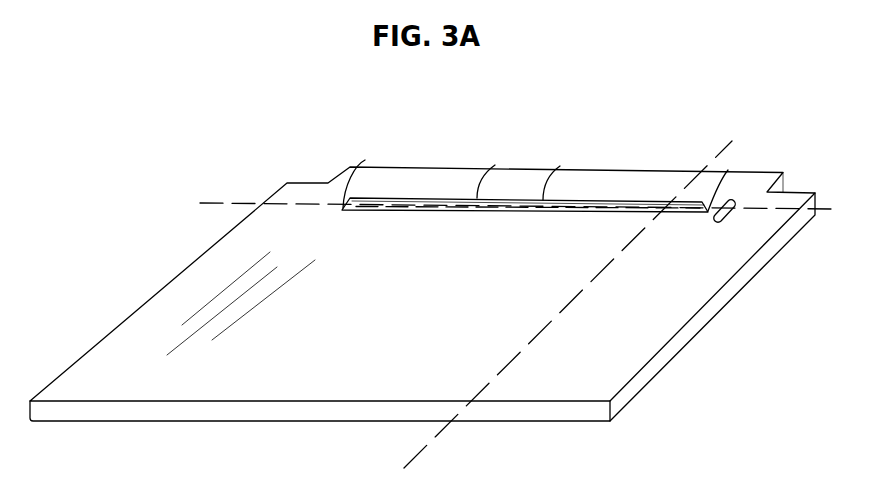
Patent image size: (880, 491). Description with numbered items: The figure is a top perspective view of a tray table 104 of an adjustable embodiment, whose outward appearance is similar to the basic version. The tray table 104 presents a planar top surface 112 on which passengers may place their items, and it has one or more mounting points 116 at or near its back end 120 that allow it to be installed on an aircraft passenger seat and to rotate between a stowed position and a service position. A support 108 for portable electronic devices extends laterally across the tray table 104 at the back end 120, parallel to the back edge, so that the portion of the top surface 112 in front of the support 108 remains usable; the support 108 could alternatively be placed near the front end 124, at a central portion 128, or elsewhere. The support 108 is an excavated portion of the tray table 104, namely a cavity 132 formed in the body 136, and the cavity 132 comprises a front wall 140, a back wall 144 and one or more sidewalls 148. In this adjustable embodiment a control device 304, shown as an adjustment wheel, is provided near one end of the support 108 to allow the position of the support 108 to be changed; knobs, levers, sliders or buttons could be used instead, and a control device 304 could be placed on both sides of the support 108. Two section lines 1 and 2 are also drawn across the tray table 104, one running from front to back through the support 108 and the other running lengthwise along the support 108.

The tray table 104 is at (716, 360).
The support 108 is at (584, 198).
The top surface 112 is at (644, 275).
The mounting points 116 is at (318, 166).
The back end 120 is at (624, 167).
The front end 124 is at (322, 401).
The central portion 128 is at (447, 288).
The cavity 132 is at (416, 192).
The body 136 is at (591, 378).
The front wall 140 is at (560, 166).
The back wall 144 is at (495, 165).
The sidewalls 148 is at (365, 160).
The control device 304 is at (716, 222).
The section line 1 is at (565, 311).
The section line 2 is at (506, 204).